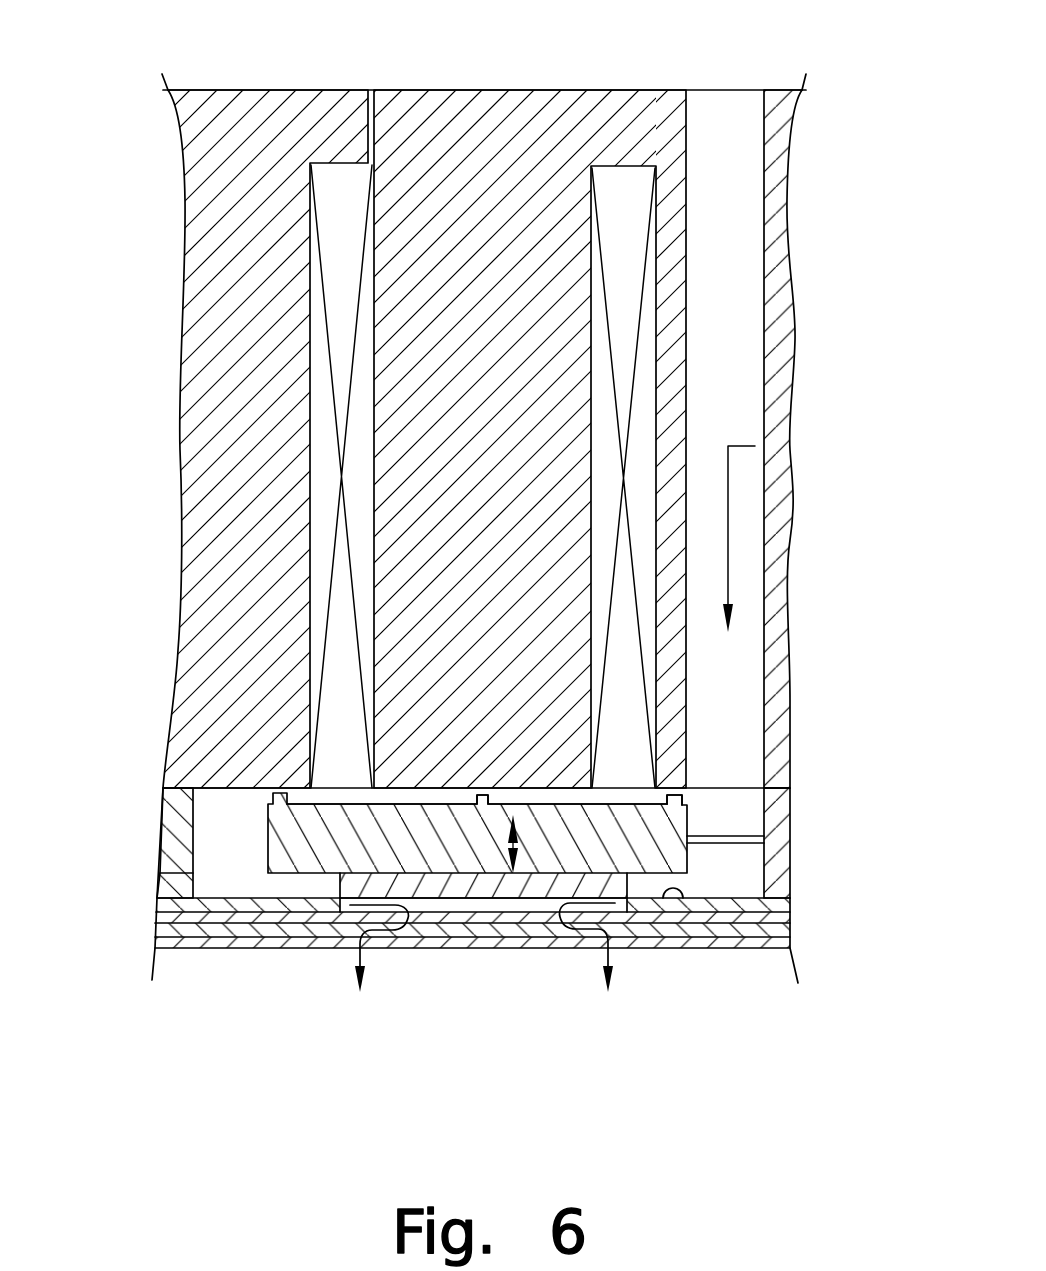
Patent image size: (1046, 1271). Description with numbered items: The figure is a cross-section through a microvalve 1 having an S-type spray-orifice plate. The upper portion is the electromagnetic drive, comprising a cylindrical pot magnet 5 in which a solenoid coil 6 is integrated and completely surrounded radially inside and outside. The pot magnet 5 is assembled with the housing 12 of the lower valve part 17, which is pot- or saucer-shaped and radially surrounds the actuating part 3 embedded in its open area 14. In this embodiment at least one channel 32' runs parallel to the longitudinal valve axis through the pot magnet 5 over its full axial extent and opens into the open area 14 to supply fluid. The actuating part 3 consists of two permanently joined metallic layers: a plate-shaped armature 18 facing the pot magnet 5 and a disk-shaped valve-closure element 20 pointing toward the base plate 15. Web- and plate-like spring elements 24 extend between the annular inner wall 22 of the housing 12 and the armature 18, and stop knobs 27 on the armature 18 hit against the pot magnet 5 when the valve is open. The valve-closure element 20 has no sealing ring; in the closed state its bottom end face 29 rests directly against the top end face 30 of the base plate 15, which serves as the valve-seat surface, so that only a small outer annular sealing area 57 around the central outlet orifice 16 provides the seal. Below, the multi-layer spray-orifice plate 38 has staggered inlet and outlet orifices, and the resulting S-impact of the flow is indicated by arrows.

The microvalve 1 is at (158, 690).
The actuating part 3 is at (245, 836).
The pot magnet 5 is at (763, 582).
The solenoid coil 6 is at (629, 168).
The housing 12 is at (767, 898).
The open area 14 is at (247, 877).
The base plate 15 is at (742, 907).
The outlet orifice 16 is at (485, 903).
The lower valve part 17 is at (818, 950).
The armature 18 is at (668, 823).
The valve-closure element 20 is at (420, 885).
The inner wall 22 is at (780, 883).
The spring elements 24 is at (748, 838).
The stop knobs 27 is at (674, 798).
The bottom end face 29 is at (519, 898).
The top end face 30 is at (688, 913).
The channel 32' is at (826, 478).
The spray-orifice plate 38 is at (458, 933).
The annular sealing area 57 is at (642, 898).